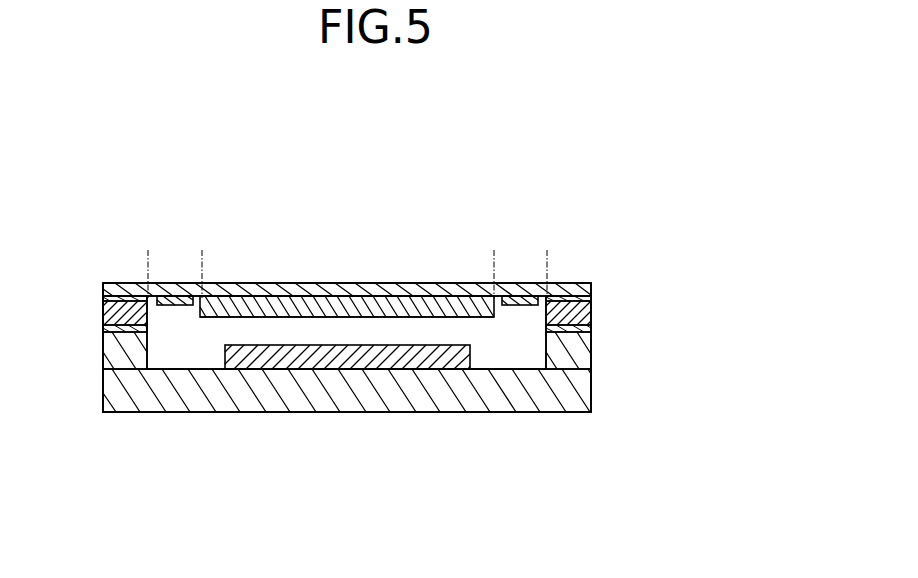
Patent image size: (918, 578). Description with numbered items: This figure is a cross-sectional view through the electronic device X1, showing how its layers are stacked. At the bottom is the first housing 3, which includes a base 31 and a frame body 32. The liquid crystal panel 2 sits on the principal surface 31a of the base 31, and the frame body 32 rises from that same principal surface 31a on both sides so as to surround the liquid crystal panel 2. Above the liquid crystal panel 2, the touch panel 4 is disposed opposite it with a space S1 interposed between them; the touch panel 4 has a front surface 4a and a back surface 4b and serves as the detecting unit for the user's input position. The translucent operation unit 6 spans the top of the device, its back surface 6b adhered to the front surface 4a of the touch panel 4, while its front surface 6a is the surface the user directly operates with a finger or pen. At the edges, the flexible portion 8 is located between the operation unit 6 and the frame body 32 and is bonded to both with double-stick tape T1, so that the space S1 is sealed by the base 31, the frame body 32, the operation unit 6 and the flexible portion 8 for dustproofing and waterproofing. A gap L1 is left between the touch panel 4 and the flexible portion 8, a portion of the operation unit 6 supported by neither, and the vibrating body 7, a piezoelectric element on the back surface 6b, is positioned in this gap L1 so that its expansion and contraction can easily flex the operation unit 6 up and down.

The electronic device X1 is at (530, 136).
The liquid crystal panel 2 is at (345, 360).
The first housing 3 is at (100, 495).
The base 31 is at (167, 405).
The principal surface 31a is at (173, 370).
The frame body 32 is at (110, 352).
The touch panel 4 is at (343, 288).
The front surface 4a is at (375, 297).
The back surface 4b is at (384, 322).
The operation unit 6 is at (253, 290).
The front surface 6a is at (277, 290).
The back surface 6b is at (302, 295).
The vibrating body 7 is at (183, 300).
The flexible portion 8 is at (103, 302).
The space S1 is at (458, 332).
The double-stick tape T1 is at (103, 289).
The gap L1 is at (545, 254).